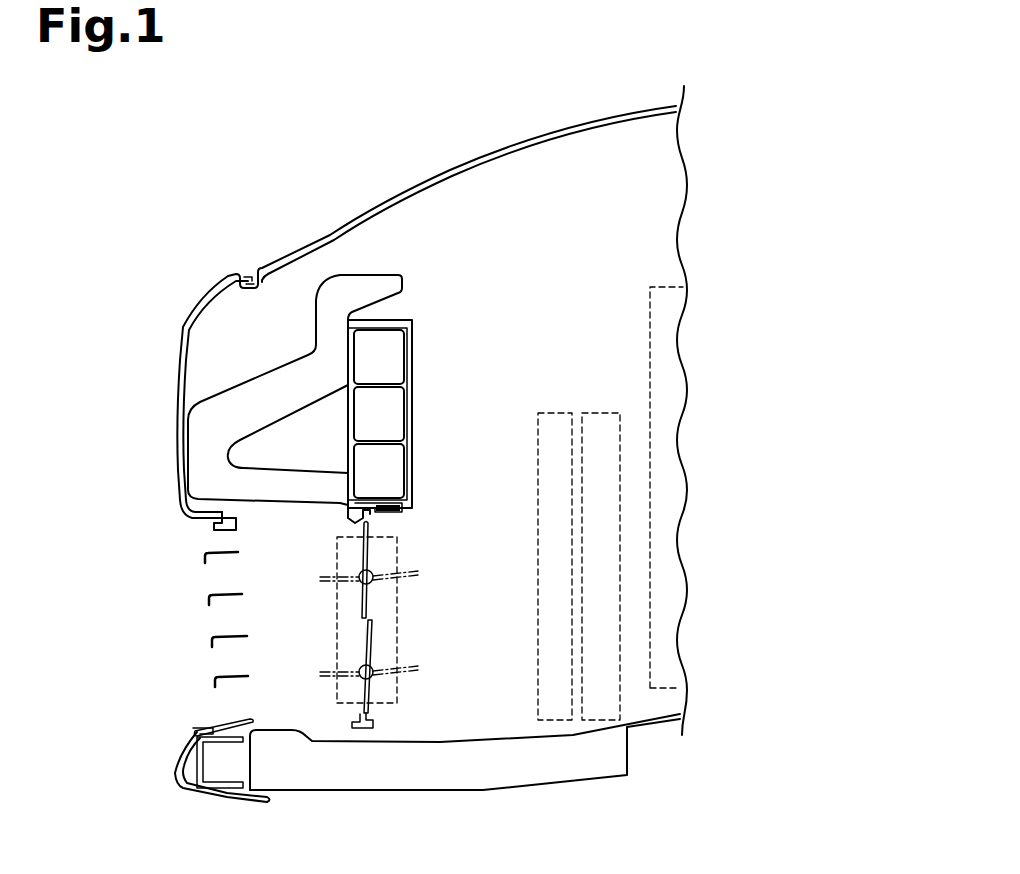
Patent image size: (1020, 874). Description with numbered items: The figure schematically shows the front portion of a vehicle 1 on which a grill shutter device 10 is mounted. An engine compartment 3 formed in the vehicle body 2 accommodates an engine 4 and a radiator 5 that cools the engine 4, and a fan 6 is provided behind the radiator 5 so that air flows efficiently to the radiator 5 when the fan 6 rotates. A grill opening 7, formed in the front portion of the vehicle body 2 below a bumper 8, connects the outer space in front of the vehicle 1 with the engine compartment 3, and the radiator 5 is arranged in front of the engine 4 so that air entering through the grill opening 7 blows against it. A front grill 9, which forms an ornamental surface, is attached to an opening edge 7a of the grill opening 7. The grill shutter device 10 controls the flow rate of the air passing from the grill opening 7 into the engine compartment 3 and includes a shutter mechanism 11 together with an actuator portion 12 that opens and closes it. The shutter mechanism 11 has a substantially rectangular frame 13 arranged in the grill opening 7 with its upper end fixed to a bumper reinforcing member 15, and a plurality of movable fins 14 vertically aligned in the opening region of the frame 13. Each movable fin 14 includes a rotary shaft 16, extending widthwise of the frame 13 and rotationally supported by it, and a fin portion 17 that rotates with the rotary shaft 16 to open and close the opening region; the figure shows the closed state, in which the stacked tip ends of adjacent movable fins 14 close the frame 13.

The vehicle 1 is at (197, 170).
The vehicle body 2 is at (545, 133).
The engine compartment 3 is at (600, 199).
The engine 4 is at (662, 285).
The radiator 5 is at (553, 412).
The fan 6 is at (602, 412).
The grill opening 7 is at (176, 525).
The opening edge 7a is at (235, 722).
The bumper 8 is at (415, 300).
The front grill 9 is at (215, 682).
The grill shutter device 10 is at (317, 552).
The shutter mechanism 11 is at (348, 625).
The actuator portion 12 is at (400, 700).
The frame 13 is at (403, 510).
The movable fin 14 is at (467, 540).
The bumper reinforcing member 15 is at (412, 358).
The rotary shaft 16 is at (372, 583).
The fin portion 17 is at (370, 545).